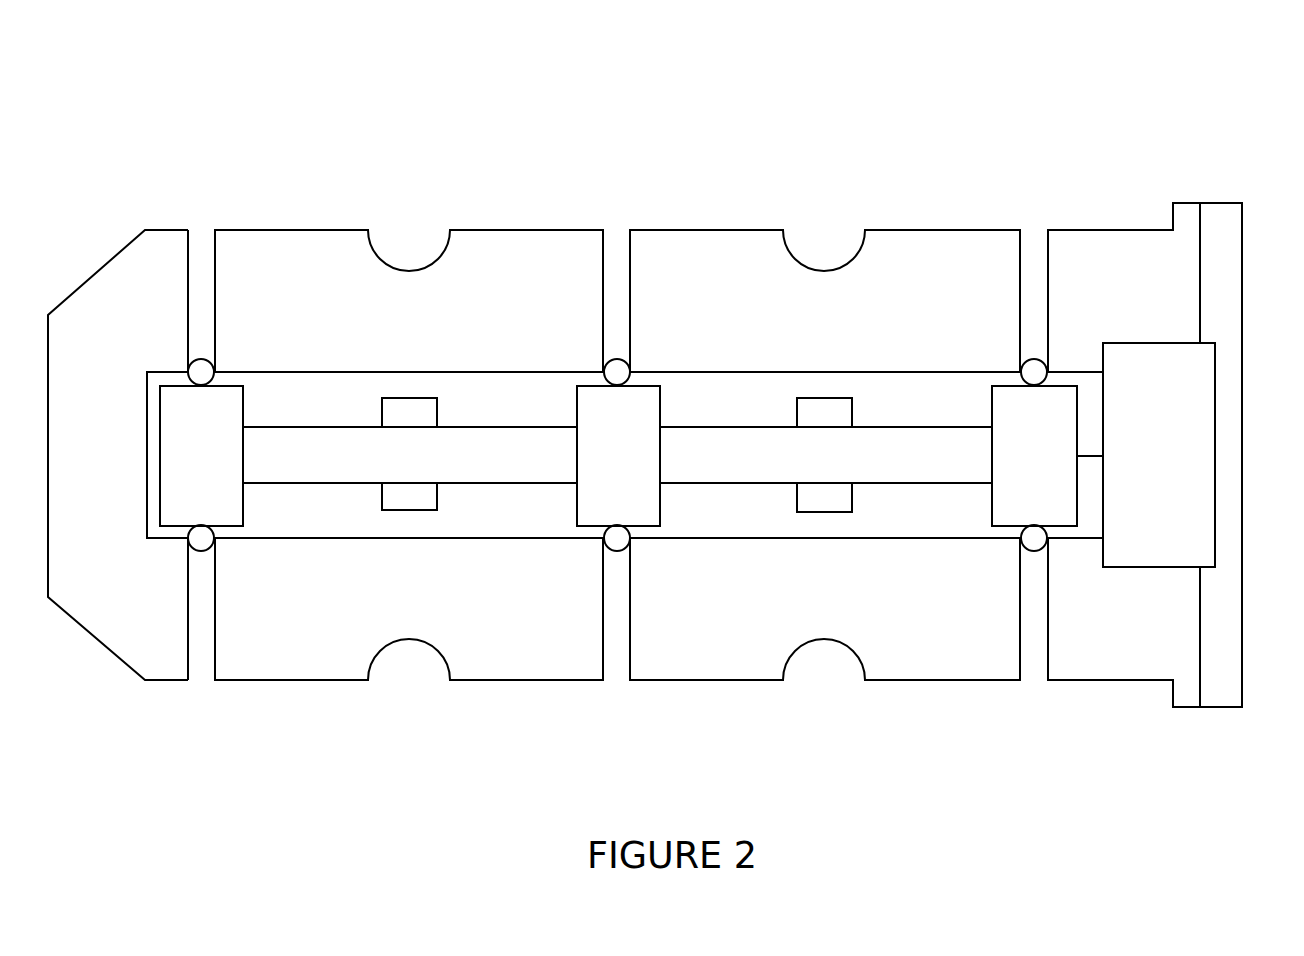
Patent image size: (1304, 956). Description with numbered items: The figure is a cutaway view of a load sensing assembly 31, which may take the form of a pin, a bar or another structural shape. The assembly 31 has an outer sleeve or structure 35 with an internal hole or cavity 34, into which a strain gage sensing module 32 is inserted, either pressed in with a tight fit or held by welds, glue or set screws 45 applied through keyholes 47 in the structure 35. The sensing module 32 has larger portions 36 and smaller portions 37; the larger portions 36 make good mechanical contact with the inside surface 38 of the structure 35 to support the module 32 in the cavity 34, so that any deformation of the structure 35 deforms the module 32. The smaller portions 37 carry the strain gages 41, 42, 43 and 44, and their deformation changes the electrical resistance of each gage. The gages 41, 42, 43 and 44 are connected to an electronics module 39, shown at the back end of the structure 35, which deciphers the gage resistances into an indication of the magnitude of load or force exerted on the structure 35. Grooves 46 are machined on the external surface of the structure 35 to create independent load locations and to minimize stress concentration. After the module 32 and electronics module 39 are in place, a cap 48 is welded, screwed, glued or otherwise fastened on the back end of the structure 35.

The load sensing assembly 31 is at (900, 107).
The sensing module 32 is at (521, 490).
The cavity 34 is at (299, 525).
The structure 35 is at (97, 270).
The portions 36 is at (189, 468).
The portions 37 is at (299, 467).
The inside surface 38 is at (275, 372).
The electronics module 39 is at (1144, 468).
The strain gage 41 is at (430, 410).
The strain gage 42 is at (430, 503).
The strain gage 43 is at (845, 410).
The strain gage 44 is at (847, 505).
The set screws 45 is at (202, 370).
The grooves 46 is at (410, 242).
The keyholes 47 is at (202, 240).
The cap 48 is at (1225, 203).